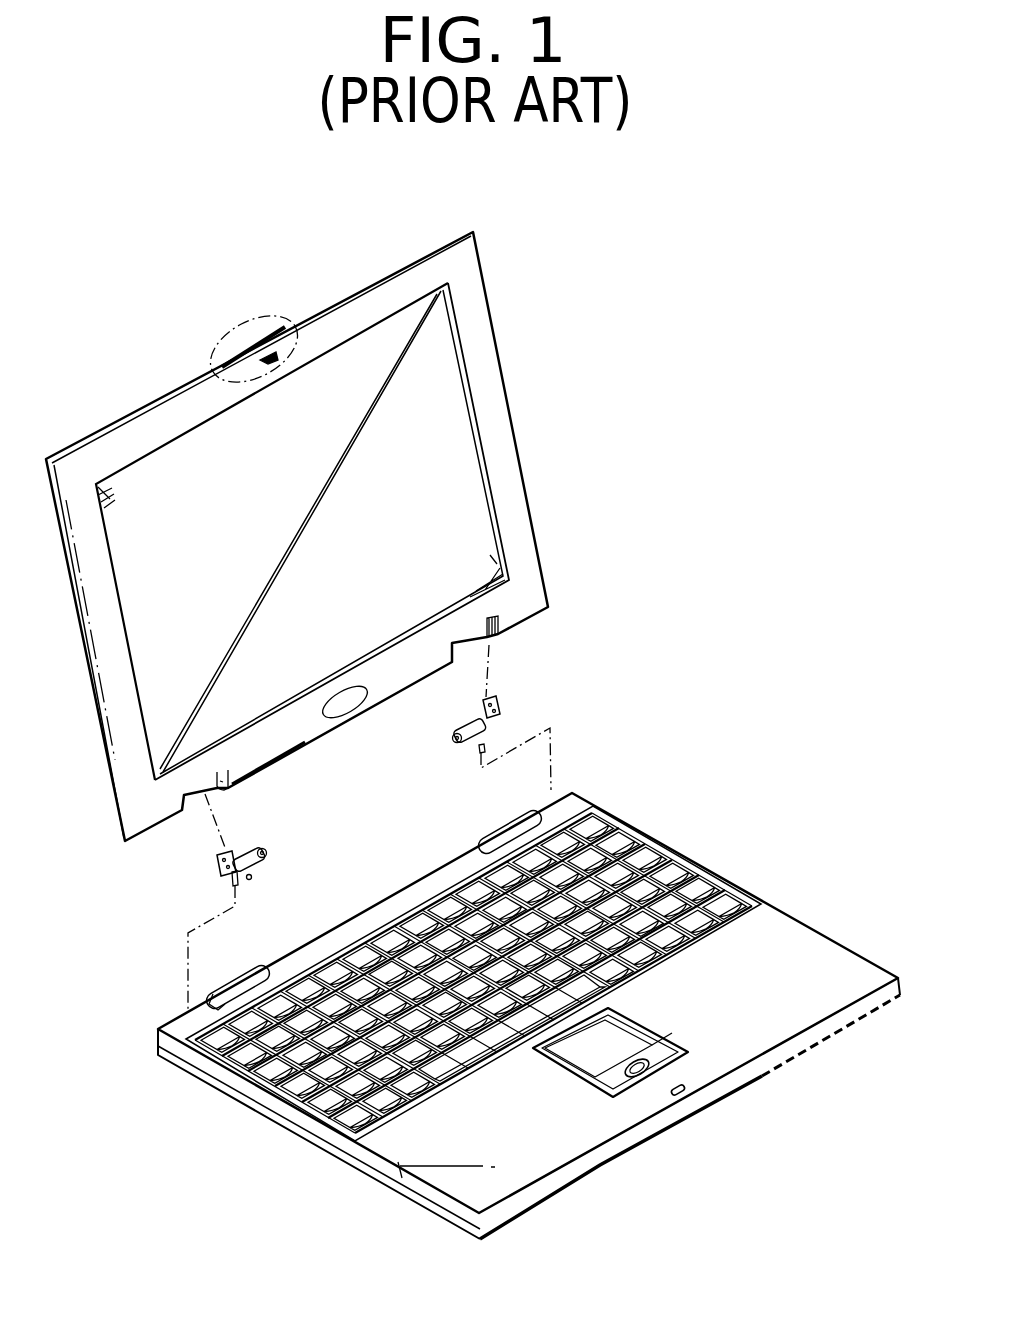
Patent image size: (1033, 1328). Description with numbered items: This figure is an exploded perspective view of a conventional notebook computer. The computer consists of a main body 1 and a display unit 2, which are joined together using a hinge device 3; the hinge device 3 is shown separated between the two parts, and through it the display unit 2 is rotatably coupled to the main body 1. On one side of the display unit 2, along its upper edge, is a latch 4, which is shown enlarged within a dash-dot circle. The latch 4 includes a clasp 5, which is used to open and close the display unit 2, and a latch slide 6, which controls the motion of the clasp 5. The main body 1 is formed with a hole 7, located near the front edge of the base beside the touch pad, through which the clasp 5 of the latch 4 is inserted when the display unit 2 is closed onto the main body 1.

The main body 1 is at (829, 940).
The display unit 2 is at (500, 431).
The hinge device 3 is at (500, 703).
The latch 4 is at (273, 313).
The clasp 5 is at (240, 367).
The latch slide 6 is at (257, 340).
The hole 7 is at (684, 1093).